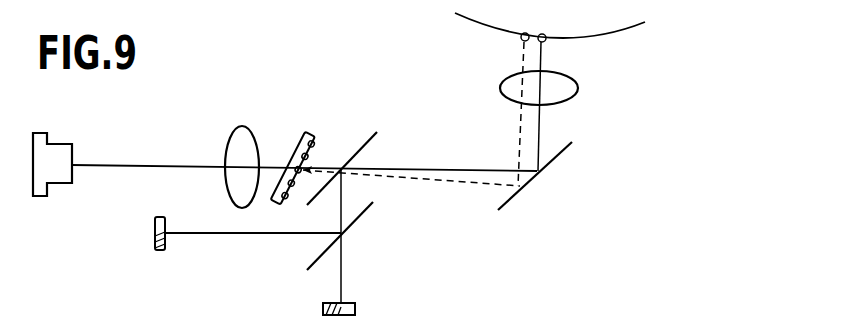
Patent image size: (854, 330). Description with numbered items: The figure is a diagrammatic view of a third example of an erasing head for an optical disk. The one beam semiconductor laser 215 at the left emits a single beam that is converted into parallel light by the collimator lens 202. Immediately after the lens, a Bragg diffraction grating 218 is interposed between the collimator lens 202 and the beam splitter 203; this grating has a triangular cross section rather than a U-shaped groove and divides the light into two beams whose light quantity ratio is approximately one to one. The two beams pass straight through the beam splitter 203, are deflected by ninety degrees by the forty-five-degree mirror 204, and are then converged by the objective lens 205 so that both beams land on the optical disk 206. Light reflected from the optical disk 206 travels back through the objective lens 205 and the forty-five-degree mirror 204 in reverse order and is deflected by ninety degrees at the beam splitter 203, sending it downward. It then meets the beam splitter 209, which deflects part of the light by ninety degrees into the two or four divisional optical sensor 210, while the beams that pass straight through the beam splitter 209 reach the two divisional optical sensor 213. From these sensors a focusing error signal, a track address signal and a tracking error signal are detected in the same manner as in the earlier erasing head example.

The collimator lens 202 is at (245, 127).
The beam splitter 203 is at (366, 128).
The 45-degree mirror 204 is at (552, 163).
The objective lens 205 is at (578, 85).
The optical disk 206 is at (627, 25).
The beam splitter 209 is at (368, 210).
The two or four divisional optical sensor 210 is at (160, 253).
The two divisional optical sensor 213 is at (357, 307).
The one beam semiconductor laser 215 is at (62, 182).
The Bragg diffraction grating 218 is at (332, 97).